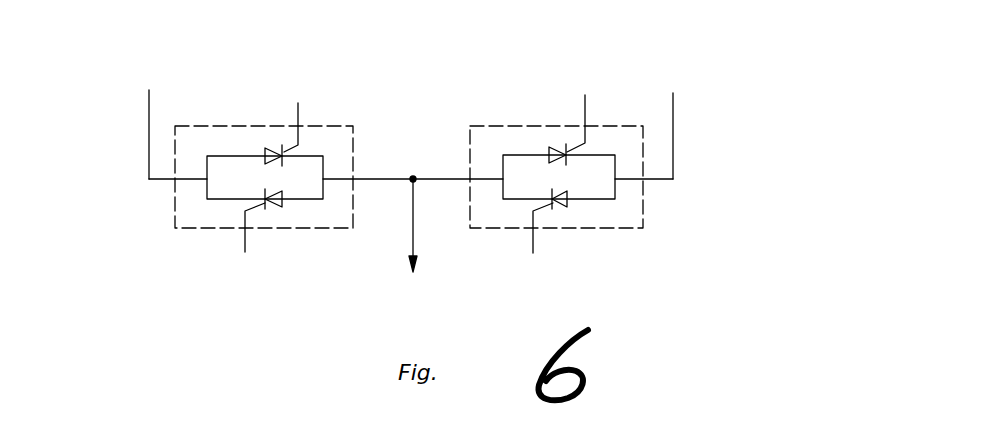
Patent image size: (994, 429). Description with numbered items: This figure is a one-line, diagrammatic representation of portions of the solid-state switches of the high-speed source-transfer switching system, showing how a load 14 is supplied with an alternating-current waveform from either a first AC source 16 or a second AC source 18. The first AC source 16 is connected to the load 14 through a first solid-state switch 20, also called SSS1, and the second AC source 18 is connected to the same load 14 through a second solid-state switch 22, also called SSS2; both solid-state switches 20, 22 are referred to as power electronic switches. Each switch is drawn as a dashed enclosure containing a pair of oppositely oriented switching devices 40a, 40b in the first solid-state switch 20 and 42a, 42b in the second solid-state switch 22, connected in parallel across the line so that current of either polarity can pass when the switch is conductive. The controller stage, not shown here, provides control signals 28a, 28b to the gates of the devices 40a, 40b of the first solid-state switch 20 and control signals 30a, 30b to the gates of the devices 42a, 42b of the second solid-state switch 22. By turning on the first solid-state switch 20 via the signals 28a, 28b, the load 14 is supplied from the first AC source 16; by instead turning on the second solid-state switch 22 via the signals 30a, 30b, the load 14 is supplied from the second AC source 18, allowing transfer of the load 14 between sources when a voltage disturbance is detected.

The load 14 is at (410, 236).
The first AC source 16 is at (147, 115).
The second AC source 18 is at (674, 108).
The first solid-state switch 20 is at (335, 124).
The second solid-state switch 22 is at (605, 124).
The control signal 28a is at (299, 108).
The control signal 28b is at (245, 243).
The control signal 30a is at (587, 108).
The control signal 30b is at (533, 243).
The first SCR of first switching unit 40a is at (272, 149).
The second SCR of first switching unit 40b is at (283, 207).
The first SCR of second switching unit 42a is at (551, 147).
The second SCR of second switching unit 42b is at (566, 207).